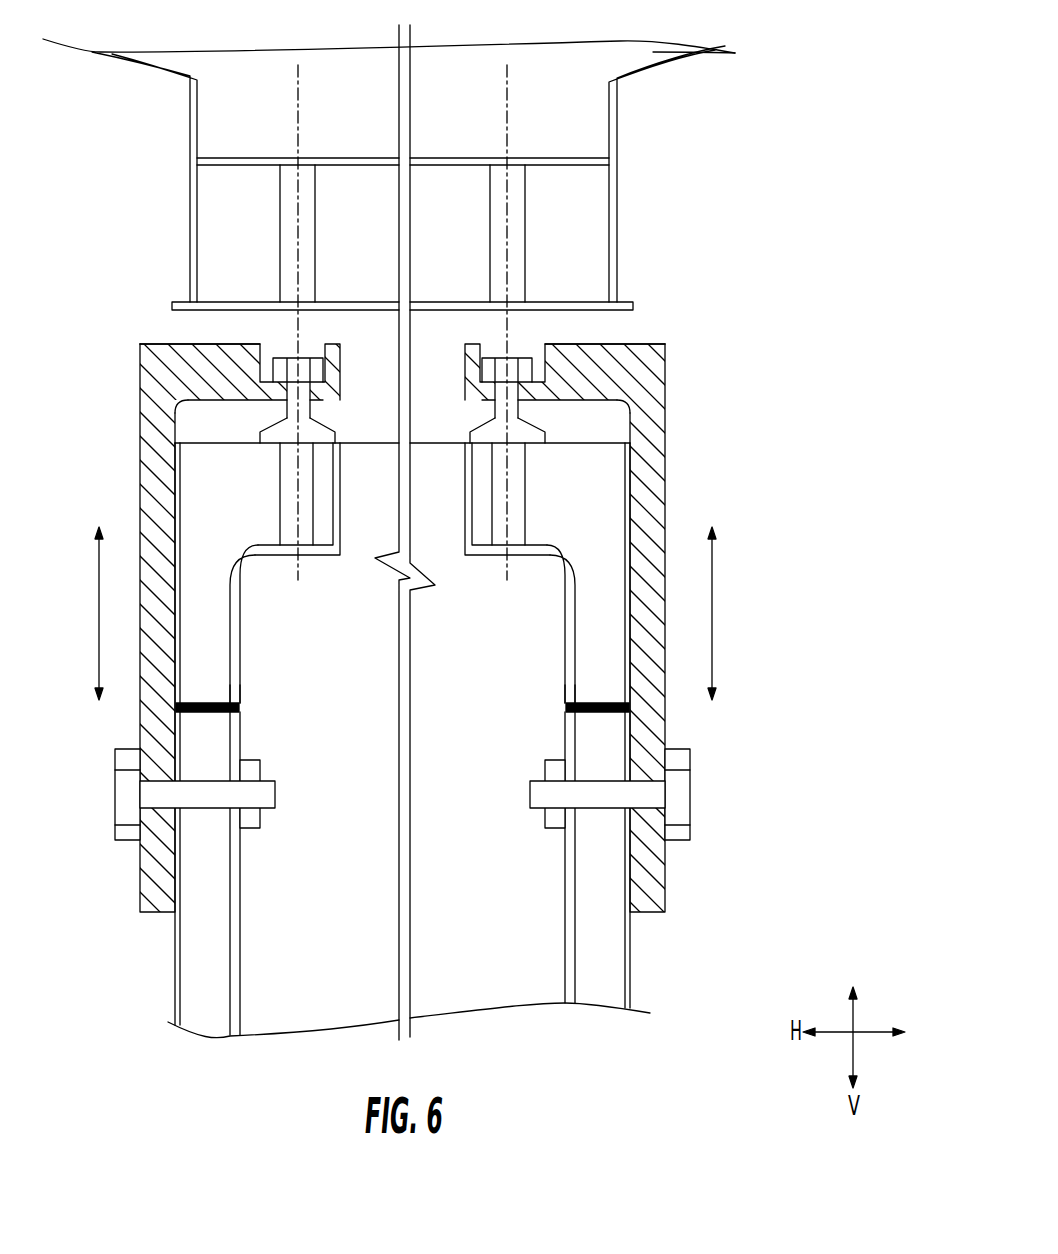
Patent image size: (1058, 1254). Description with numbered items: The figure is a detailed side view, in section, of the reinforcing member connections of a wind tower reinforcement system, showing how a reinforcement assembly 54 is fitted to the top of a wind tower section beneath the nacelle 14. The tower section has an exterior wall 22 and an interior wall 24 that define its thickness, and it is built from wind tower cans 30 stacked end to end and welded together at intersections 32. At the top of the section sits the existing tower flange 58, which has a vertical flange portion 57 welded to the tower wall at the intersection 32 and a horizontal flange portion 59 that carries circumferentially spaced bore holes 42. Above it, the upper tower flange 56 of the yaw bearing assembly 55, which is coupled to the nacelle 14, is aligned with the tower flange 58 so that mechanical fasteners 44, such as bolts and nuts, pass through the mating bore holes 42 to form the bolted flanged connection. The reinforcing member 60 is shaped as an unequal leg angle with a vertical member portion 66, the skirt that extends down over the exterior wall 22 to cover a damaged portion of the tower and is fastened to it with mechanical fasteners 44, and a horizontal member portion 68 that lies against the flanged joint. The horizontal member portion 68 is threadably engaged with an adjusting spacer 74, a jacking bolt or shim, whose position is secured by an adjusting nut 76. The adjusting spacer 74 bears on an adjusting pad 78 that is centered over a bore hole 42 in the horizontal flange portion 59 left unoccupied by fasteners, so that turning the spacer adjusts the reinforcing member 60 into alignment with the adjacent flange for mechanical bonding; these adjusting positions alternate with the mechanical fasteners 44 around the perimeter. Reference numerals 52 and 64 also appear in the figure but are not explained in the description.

The nacelle 14 is at (705, 49).
The exterior wall 22 is at (688, 962).
The interior wall 24 is at (535, 922).
The wind tower can 30 is at (610, 960).
The intersection 32 is at (742, 716).
The bore hole 42 is at (512, 508).
The mechanical fastener 44 is at (680, 795).
The centerline axis 52 is at (545, 105).
The reinforcement assembly 54 is at (126, 314).
The yaw bearing assembly 55 is at (582, 265).
The upper tower flange 56 is at (632, 305).
The vertical flange portion 57 is at (545, 675).
The tower flange 58 is at (535, 630).
The horizontal flange portion 59 is at (470, 598).
The reinforcing member 60 is at (736, 346).
The inner plate 64 is at (628, 436).
The vertical member portion 66 is at (720, 400).
The horizontal member portion 68 is at (620, 325).
The adjusting spacer 74 is at (440, 375).
The adjusting nut 76 is at (447, 325).
The adjusting pad 78 is at (427, 413).